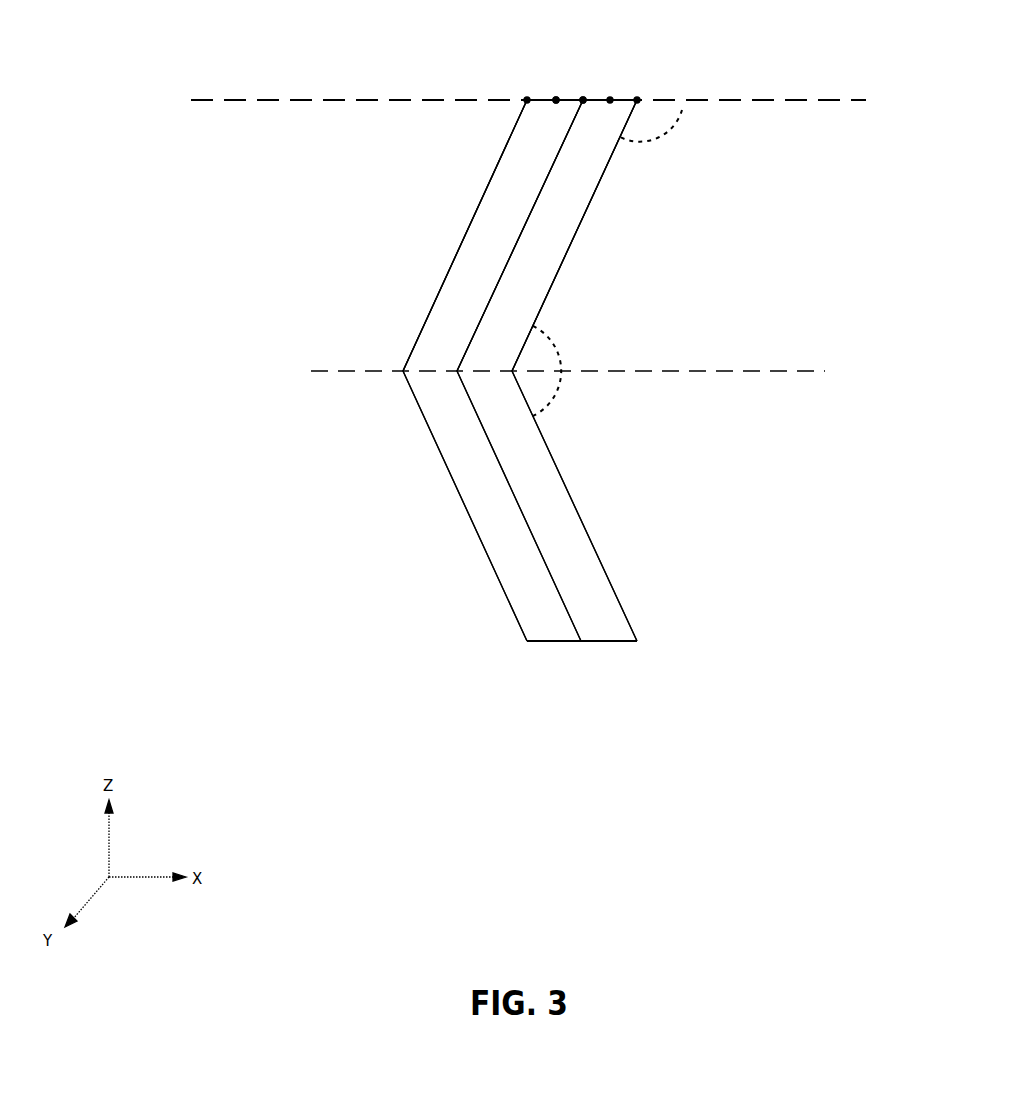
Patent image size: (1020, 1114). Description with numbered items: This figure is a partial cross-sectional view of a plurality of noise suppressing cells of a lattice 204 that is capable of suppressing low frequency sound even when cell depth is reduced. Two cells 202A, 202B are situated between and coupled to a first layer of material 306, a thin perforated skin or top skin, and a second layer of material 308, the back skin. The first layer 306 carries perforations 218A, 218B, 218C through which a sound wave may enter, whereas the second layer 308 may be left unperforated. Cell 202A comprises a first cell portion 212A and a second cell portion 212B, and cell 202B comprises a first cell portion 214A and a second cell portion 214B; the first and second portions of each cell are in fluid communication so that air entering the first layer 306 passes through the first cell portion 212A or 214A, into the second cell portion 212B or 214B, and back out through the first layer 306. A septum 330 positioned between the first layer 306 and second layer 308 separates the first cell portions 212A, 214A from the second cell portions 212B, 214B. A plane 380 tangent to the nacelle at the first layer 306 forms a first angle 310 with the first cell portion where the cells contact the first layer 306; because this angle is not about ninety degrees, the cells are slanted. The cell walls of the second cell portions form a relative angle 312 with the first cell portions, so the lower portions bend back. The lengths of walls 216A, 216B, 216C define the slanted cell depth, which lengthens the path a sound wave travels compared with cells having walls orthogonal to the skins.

The lattice 204 is at (740, 70).
The cell 202A is at (510, 137).
The cell 202B is at (571, 180).
The first cell portion 212A is at (499, 157).
The second cell portion 212B is at (473, 523).
The first cell portion 214A is at (613, 154).
The second cell portion 214B is at (585, 528).
The wall 216A is at (448, 267).
The wall 216B is at (523, 233).
The wall 216C is at (557, 272).
The perforation 218A is at (528, 100).
The perforation 218B is at (557, 100).
The perforation 218C is at (583, 100).
The first layer of material 306 is at (637, 100).
The second layer of material 308 is at (602, 641).
The first angle 310 is at (682, 110).
The relative angle 312 is at (560, 388).
The septum 330 is at (727, 371).
The plane 380 is at (763, 100).